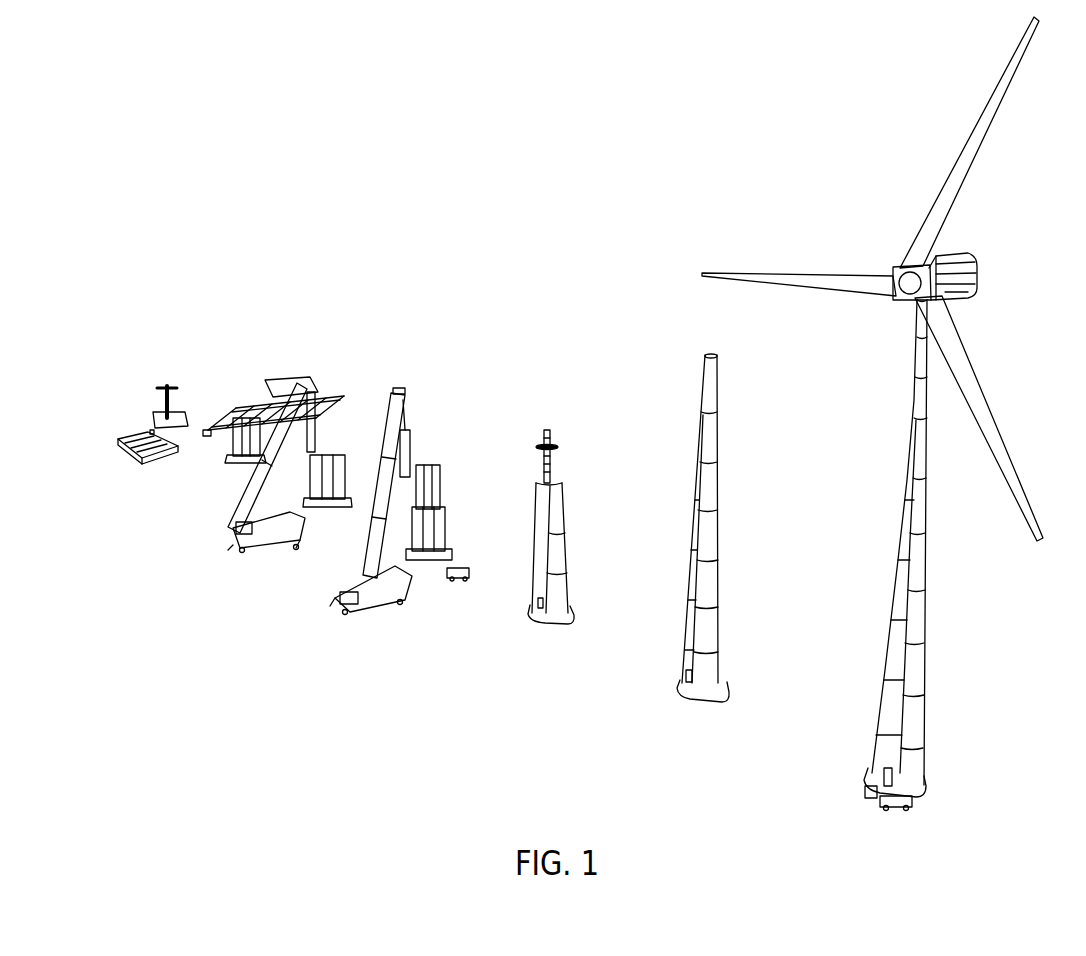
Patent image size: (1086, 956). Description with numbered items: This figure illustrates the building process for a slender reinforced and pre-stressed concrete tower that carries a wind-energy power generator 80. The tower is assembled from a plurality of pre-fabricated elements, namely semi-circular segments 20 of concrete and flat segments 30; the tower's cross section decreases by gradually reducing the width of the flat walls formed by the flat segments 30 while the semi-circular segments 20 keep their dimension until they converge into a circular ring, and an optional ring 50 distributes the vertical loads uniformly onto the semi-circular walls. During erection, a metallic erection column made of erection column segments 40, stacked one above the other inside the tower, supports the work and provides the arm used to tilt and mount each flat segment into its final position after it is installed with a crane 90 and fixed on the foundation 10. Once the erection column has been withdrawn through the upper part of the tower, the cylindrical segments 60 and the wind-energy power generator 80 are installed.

The foundation base 10 is at (155, 418).
The semi-circular segments 20 is at (260, 405).
The flat segments 30 is at (132, 457).
The erection column segments 40 is at (160, 387).
The ring 50 is at (706, 358).
The cylindrical segments 60 is at (919, 361).
The wind-energy power generator 80 is at (902, 270).
The crane 90 is at (240, 542).